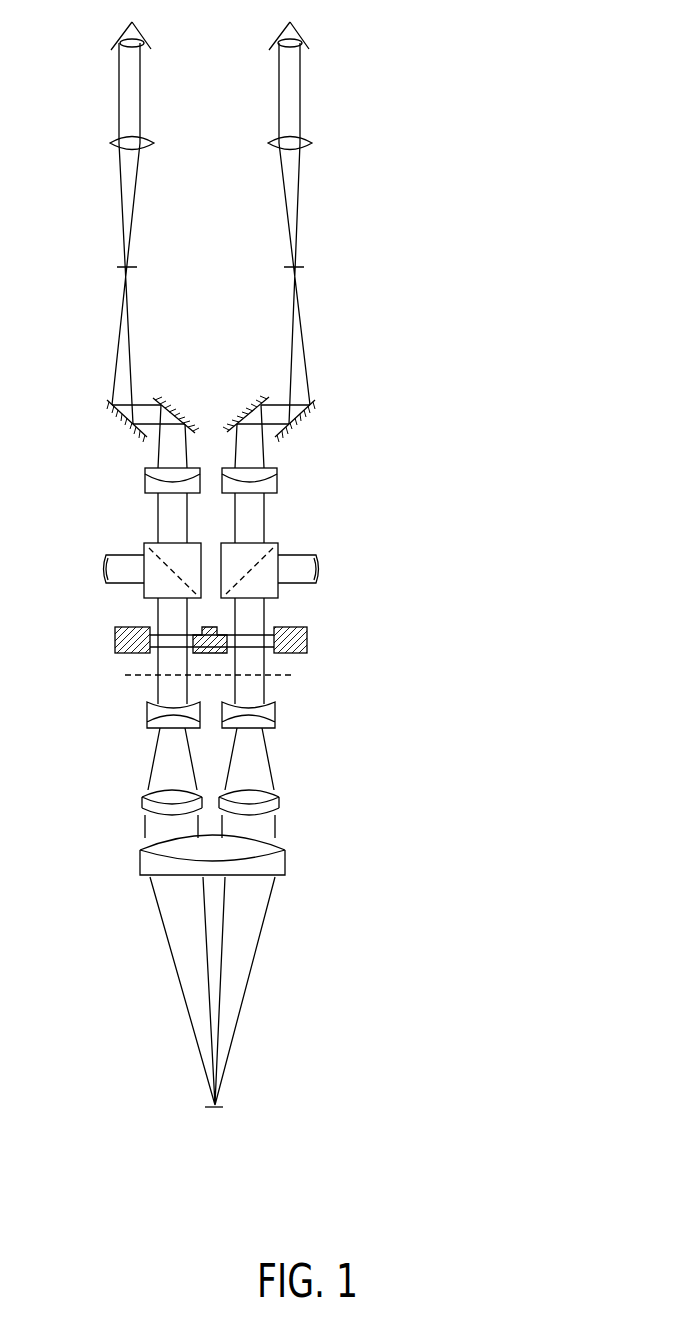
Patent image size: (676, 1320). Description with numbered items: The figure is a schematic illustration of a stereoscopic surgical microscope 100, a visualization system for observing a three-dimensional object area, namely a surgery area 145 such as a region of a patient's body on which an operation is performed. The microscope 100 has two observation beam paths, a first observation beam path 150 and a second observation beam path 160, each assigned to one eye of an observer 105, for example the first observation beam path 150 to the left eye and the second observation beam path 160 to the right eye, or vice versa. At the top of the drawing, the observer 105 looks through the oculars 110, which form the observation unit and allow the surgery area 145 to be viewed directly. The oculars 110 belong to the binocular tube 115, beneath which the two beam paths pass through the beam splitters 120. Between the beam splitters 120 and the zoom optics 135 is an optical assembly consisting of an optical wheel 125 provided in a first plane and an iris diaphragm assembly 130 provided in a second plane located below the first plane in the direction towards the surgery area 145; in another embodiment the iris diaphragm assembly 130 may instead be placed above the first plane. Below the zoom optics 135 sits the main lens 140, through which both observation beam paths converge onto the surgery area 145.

The stereoscopic surgical microscope 100 is at (455, 256).
The observer 105 is at (300, 34).
The oculars 110 is at (312, 143).
The binocular tube 115 is at (333, 187).
The beam splitters 120 is at (278, 552).
The optical wheel 125 is at (308, 645).
The iris diaphragm assembly 130 is at (133, 678).
The zoom optics 135 is at (295, 695).
The main lens 140 is at (287, 860).
The surgery area 145 is at (218, 1108).
The first observation beam path 150 is at (165, 619).
The second observation beam path 160 is at (252, 620).